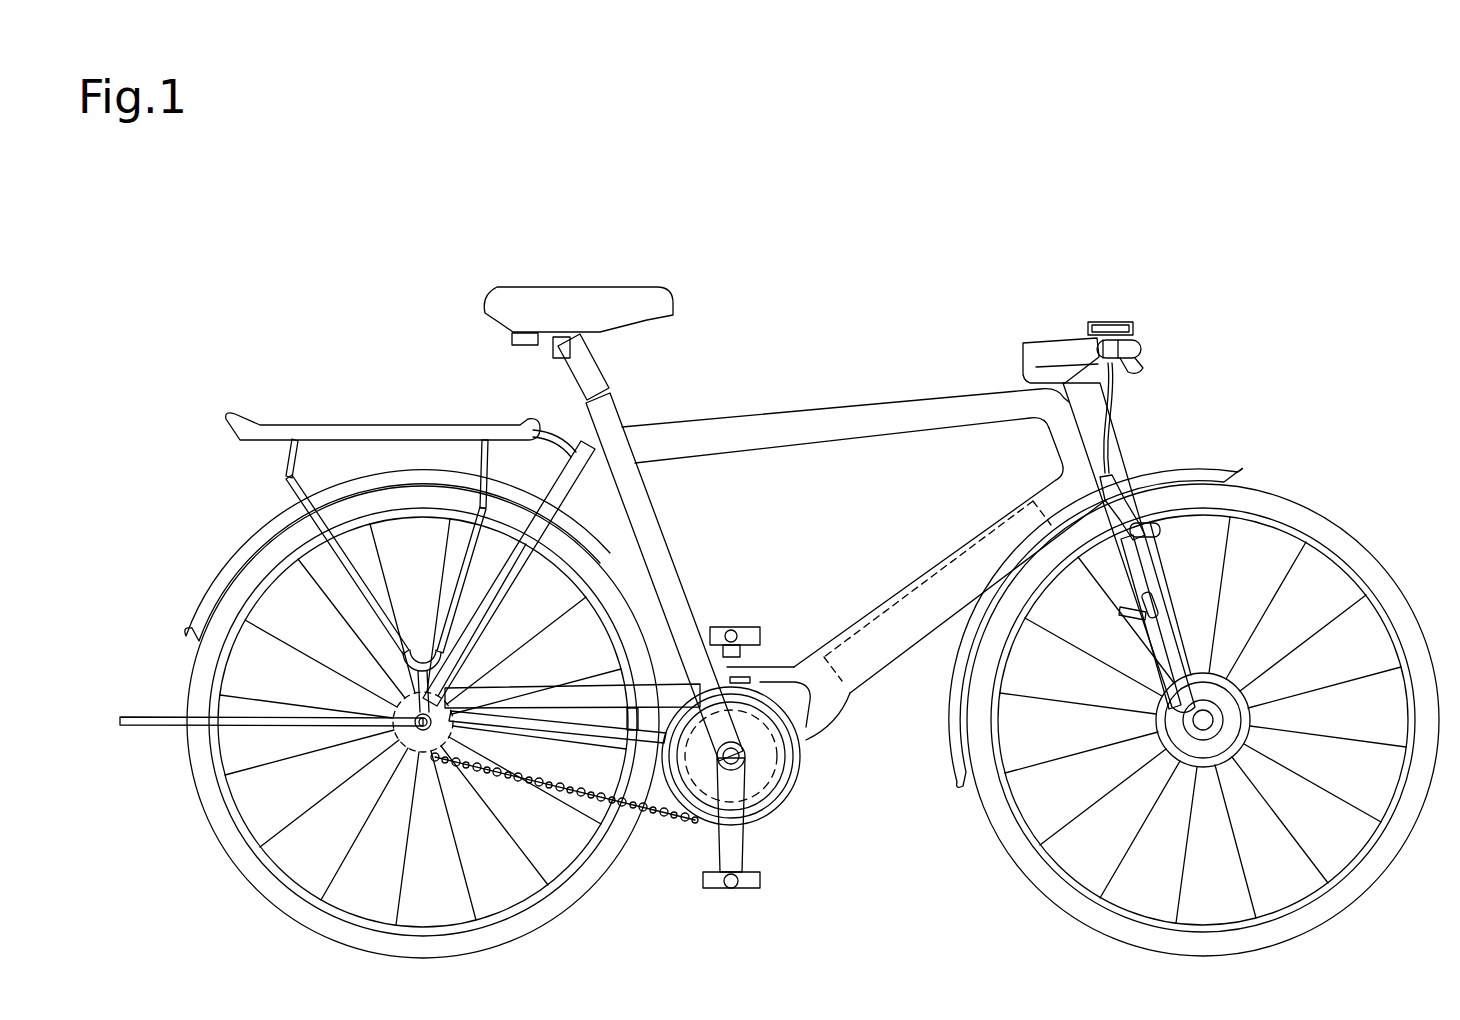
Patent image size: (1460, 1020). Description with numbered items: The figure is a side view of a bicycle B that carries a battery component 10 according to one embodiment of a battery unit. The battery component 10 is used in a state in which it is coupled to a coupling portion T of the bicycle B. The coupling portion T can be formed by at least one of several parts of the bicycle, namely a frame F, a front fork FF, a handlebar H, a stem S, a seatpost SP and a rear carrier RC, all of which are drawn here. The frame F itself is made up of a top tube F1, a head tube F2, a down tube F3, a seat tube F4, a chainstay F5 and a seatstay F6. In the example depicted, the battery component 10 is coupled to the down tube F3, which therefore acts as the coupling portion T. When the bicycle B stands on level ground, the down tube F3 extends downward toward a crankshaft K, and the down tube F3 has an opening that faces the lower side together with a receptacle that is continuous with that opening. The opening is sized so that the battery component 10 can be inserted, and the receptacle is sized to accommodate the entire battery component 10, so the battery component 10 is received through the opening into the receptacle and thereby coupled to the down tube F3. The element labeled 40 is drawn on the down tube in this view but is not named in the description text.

The bicycle B is at (1282, 231).
The rear carrier RC is at (386, 425).
The seatpost SP is at (591, 350).
The frame F is at (919, 400).
The top tube F1 is at (780, 414).
The head tube F2 is at (1040, 442).
The down tube F3 is at (916, 551).
The coupling portion T is at (950, 584).
The battery 40 is at (963, 530).
The seat tube F4 is at (673, 527).
The chainstay F5 is at (570, 686).
The seatstay F6 is at (586, 458).
The battery component 10 is at (842, 690).
The crankshaft K is at (741, 760).
The front fork FF is at (1160, 640).
The stem S is at (1074, 336).
The handlebar H is at (1141, 349).